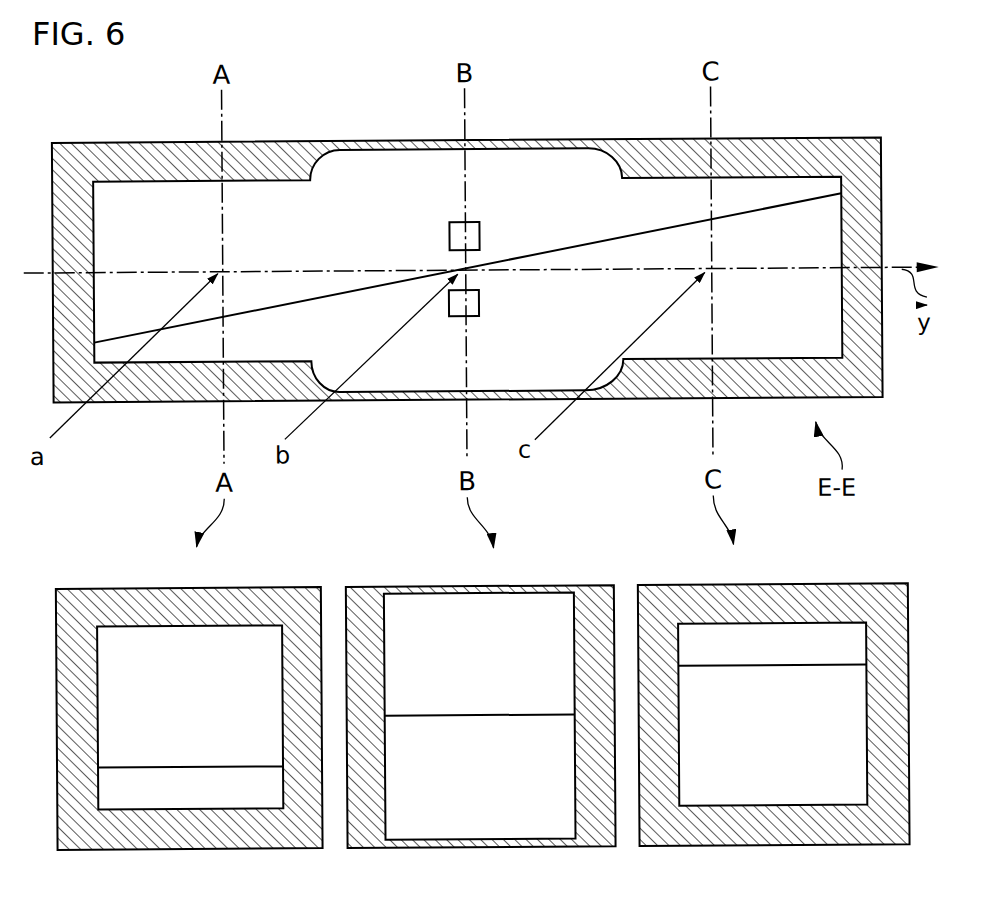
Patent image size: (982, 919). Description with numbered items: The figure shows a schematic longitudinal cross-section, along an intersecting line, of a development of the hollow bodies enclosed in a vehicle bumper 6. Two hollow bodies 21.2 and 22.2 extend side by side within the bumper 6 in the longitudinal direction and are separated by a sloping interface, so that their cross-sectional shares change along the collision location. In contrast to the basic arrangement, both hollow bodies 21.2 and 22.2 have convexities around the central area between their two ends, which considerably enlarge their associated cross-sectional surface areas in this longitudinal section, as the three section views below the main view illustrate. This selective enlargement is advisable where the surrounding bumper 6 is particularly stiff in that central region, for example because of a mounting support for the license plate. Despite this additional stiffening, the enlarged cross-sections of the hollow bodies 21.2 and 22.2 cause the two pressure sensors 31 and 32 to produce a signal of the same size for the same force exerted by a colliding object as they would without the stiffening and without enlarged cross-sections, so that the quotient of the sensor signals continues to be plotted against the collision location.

The bumper 6 is at (426, 399).
The hollow body 21.2 is at (557, 158).
The hollow body 22.2 is at (783, 347).
The pressure sensor 31 is at (450, 238).
The pressure sensor 32 is at (481, 305).